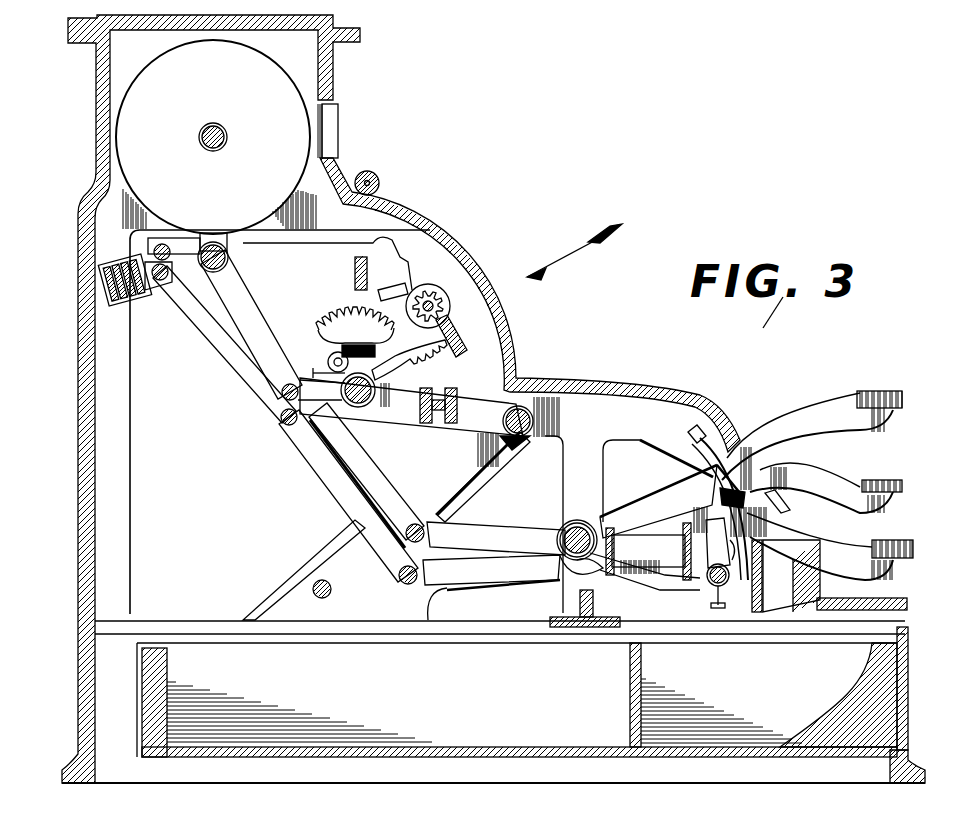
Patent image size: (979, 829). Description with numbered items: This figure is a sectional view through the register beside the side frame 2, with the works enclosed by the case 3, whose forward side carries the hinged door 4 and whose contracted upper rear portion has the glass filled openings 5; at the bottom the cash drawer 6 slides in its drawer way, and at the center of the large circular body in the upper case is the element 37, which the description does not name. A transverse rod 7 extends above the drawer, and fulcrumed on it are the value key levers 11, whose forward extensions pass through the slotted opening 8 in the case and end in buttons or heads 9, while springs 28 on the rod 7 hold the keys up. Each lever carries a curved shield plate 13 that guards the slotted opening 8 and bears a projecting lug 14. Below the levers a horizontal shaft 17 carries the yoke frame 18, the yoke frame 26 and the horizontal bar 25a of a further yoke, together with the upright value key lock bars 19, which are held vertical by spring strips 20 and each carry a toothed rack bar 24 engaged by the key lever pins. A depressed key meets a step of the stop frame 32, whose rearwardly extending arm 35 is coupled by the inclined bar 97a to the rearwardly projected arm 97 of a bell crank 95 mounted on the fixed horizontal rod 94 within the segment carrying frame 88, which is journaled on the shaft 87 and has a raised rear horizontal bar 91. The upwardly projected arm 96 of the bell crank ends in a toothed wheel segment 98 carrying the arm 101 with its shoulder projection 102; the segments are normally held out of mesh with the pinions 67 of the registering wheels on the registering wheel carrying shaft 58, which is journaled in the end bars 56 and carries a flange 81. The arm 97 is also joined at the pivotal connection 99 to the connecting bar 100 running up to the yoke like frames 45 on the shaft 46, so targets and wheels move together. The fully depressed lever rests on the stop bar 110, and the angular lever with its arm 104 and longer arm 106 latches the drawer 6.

The case 3 is at (78, 386).
The ribbon spool 37 is at (228, 136).
The glass filled openings 5 is at (330, 128).
The pinion 67 is at (440, 297).
The hinged door 4 is at (462, 300).
The registering wheel carrying shaft 58 is at (440, 308).
The end bars 56 is at (473, 343).
The toothed wheel segment 98 is at (333, 317).
The shoulder projection 102 is at (356, 336).
The arm 101 is at (340, 336).
The rear horizontal bar 91 is at (330, 354).
The bell cranks 95 is at (347, 373).
The upwardly projected arm 96 is at (373, 373).
The fixed horizontal rod 94 is at (360, 405).
The shaft 46 is at (217, 267).
The yoke like frames 45 is at (183, 267).
The connecting bar 100 is at (247, 332).
The pivotal connection 99 is at (280, 394).
The side frame 2 is at (473, 472).
The segment carrying frame 88 is at (406, 415).
The shaft 87 is at (538, 440).
The rearwardly projected arm 97 is at (308, 425).
The inclined bar 97a is at (358, 458).
The rearwardly extending arm 35 is at (490, 527).
The longer arm 106 is at (430, 607).
The transverse rod 7 is at (577, 522).
The rack bar 24 is at (697, 513).
The springs 28 is at (622, 540).
The yoke frame 26 is at (730, 502).
The flange 81 is at (649, 551).
The arm 104 is at (650, 580).
The value key lock bars 19 is at (703, 572).
The horizontal shaft 17 is at (725, 585).
The yoke frame 18 is at (735, 557).
The stop bar 110 is at (762, 580).
The curved shield plate 13 is at (712, 432).
The value key levers 11 is at (815, 413).
The buttons or heads 9 is at (903, 397).
The slotted opening 8 is at (777, 502).
The projecting lug 14 is at (770, 527).
The cash drawer 6 is at (903, 643).
The stop frame 32 is at (700, 565).
The horizontal bar 25a is at (703, 600).
The spring strips 20 is at (730, 600).